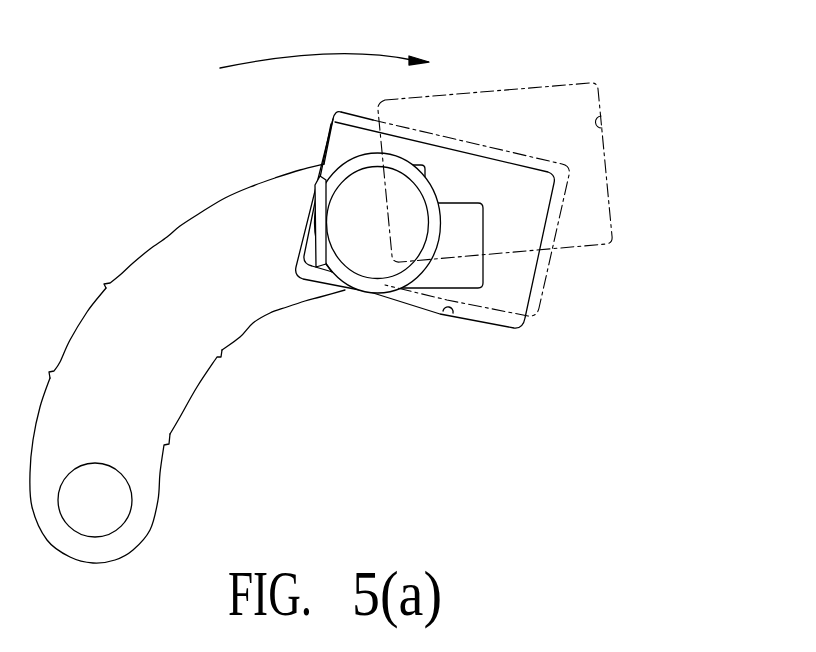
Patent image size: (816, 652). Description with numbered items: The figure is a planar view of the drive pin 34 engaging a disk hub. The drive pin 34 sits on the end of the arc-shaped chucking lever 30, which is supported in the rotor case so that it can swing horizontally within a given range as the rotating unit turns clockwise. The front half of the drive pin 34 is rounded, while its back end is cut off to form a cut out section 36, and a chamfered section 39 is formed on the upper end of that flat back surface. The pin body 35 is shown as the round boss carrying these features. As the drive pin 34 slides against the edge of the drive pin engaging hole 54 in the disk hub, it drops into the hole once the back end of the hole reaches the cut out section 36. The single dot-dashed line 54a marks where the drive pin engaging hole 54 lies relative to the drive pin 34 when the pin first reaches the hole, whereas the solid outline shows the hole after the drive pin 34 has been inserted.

The chucking lever 30 is at (173, 383).
The drive pin 34 is at (435, 190).
The boss 35 is at (362, 267).
The cut out section 36 is at (312, 223).
The chamfered section 39 is at (321, 166).
The drive pin engaging hole 54 is at (453, 314).
The single dot-dashed line 54a is at (604, 121).